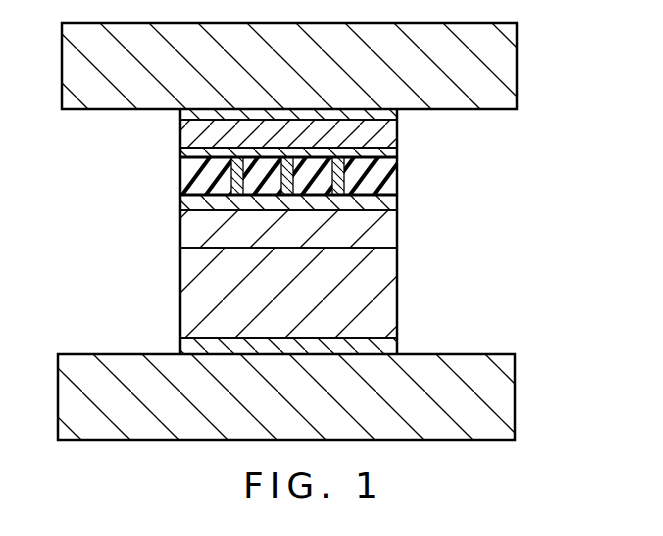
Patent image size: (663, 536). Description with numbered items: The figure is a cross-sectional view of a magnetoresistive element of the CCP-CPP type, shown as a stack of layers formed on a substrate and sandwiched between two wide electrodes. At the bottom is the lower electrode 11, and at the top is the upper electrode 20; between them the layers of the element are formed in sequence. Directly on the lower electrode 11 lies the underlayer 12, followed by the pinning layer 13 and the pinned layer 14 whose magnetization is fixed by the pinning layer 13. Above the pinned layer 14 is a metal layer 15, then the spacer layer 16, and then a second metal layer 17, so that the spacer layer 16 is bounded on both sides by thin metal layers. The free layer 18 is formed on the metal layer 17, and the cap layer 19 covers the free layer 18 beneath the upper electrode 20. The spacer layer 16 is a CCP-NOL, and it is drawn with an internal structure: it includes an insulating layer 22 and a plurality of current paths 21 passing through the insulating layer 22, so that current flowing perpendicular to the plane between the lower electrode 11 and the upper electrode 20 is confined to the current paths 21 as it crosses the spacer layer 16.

The lower electrode 11 is at (505, 393).
The underlayer 12 is at (397, 342).
The pinning layer 13 is at (392, 305).
The pinned layer 14 is at (397, 236).
The metal layer 15 is at (397, 206).
The spacer layer 16 is at (302, 180).
The metal layer 17 is at (397, 156).
The free layer 18 is at (397, 135).
The cap layer 19 is at (182, 117).
The upper electrode 20 is at (510, 60).
The current paths 21 is at (228, 160).
The insulating layer 22 is at (182, 189).